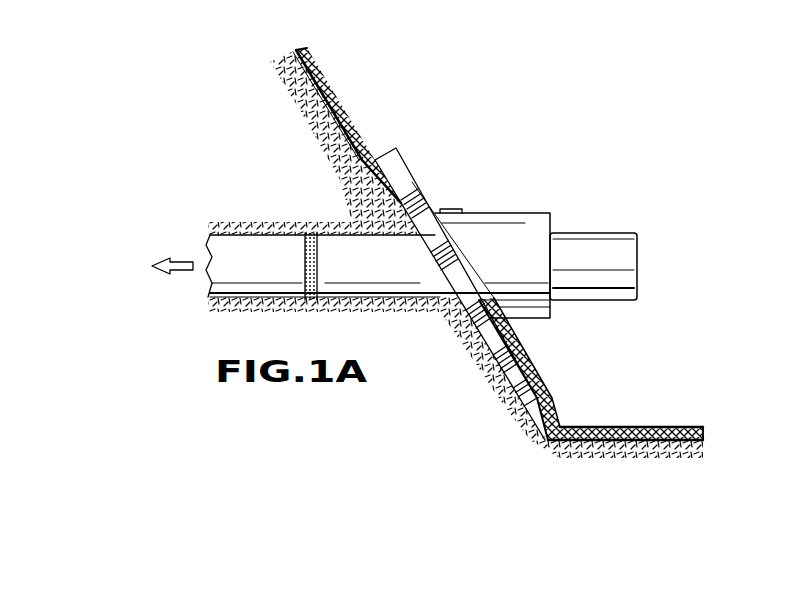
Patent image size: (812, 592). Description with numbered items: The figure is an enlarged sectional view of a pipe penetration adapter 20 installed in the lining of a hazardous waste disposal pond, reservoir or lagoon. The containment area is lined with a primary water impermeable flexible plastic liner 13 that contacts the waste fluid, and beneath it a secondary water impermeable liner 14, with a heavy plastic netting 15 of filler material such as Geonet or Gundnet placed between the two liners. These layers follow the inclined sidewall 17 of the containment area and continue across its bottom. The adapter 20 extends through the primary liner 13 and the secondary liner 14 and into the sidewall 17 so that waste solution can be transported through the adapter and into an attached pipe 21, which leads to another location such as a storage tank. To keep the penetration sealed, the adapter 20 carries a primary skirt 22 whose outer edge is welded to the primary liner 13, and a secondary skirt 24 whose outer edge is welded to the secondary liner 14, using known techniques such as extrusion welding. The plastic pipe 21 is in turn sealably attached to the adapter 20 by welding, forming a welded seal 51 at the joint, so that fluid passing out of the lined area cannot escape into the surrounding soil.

The primary liner 13 is at (323, 72).
The secondary liner 14 is at (306, 82).
The heavy plastic netting 15 is at (313, 52).
The inclined sidewall 17 is at (348, 186).
The pipe penetration adapter 20 is at (543, 204).
The pipe 21 is at (207, 300).
The primary skirt 22 is at (406, 152).
The secondary skirt 24 is at (357, 120).
The welded seal 51 is at (320, 307).